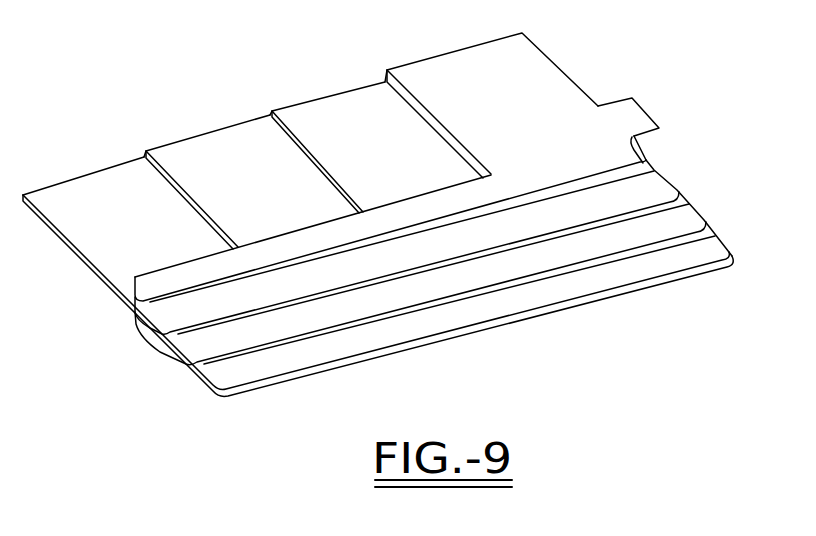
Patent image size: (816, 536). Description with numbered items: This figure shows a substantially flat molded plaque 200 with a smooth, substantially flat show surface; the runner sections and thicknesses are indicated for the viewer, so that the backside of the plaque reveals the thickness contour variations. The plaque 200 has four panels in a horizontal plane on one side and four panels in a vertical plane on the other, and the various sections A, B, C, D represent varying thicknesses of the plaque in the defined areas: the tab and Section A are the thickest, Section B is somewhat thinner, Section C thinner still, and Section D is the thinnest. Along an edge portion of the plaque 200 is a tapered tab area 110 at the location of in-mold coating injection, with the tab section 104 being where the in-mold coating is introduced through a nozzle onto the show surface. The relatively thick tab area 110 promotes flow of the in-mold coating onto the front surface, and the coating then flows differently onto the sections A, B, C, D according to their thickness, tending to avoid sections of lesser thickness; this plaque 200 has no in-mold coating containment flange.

The Section A is at (443, 154).
The Section B is at (449, 188).
The Section C is at (222, 147).
The Section D is at (95, 185).
The tab area 110 is at (645, 110).
The tab section 104 is at (660, 143).
The plaque 200 is at (408, 201).